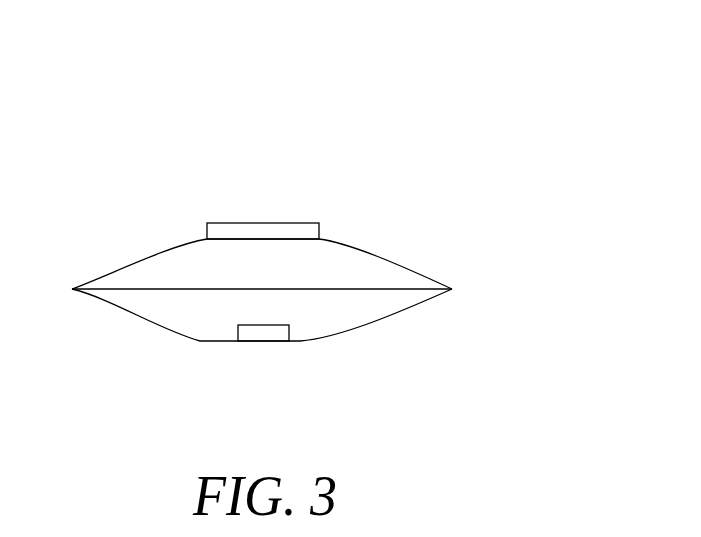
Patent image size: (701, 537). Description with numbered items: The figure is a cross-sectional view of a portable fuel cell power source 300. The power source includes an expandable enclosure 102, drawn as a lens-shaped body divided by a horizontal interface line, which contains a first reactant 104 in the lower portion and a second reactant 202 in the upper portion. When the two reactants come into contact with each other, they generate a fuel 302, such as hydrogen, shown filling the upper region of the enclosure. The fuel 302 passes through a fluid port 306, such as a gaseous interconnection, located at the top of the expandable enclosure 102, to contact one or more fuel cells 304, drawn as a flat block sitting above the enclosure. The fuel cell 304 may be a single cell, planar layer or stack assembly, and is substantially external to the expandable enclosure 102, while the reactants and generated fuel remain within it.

The portable fuel cell power source 300 is at (563, 95).
The second reactant 202 is at (370, 312).
The fuel 302 is at (161, 256).
The expandable enclosure 102 is at (377, 252).
The fuel cell 304 is at (222, 230).
The fluid port 306 is at (300, 238).
The first reactant 104 is at (264, 345).